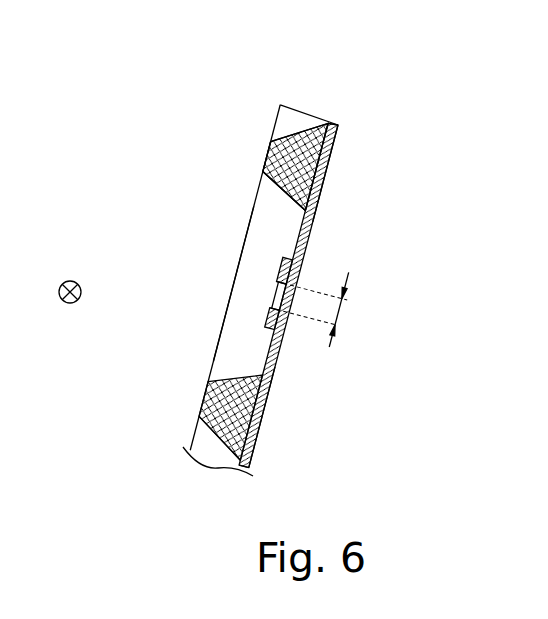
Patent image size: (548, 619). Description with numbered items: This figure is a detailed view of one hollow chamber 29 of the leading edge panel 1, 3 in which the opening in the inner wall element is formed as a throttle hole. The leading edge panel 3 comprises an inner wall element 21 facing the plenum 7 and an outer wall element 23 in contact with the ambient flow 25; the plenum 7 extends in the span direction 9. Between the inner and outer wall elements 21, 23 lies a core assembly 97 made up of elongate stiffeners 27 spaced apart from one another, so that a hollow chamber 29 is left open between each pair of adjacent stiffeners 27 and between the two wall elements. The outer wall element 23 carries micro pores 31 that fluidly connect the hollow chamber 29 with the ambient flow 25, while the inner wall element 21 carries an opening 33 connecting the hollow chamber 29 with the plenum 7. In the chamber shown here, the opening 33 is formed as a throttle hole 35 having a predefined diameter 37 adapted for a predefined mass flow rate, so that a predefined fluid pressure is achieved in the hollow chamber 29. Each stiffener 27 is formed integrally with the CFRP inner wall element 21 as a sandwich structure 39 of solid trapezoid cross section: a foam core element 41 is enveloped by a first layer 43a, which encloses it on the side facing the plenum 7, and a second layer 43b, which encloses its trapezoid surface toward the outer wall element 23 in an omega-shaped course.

The leading edge panel 1 is at (206, 96).
The leading edge panel 3 is at (335, 94).
The plenum 7 is at (393, 189).
The span direction 9 is at (69, 280).
The inner wall element 21 is at (273, 352).
The outer wall element 23 is at (245, 236).
The ambient flow 25 is at (213, 282).
The elongate stiffener 27 is at (272, 151).
The hollow chamber 29 is at (256, 354).
The micro pores 31 is at (223, 327).
The opening 33 is at (276, 292).
The throttle hole 35 is at (272, 319).
The predefined diameter 37 is at (344, 309).
The sandwich structure 39 is at (300, 110).
The core element 41 is at (331, 149).
The first layer 43a is at (322, 186).
The second layer 43b is at (263, 205).
The core assembly 97 is at (292, 161).